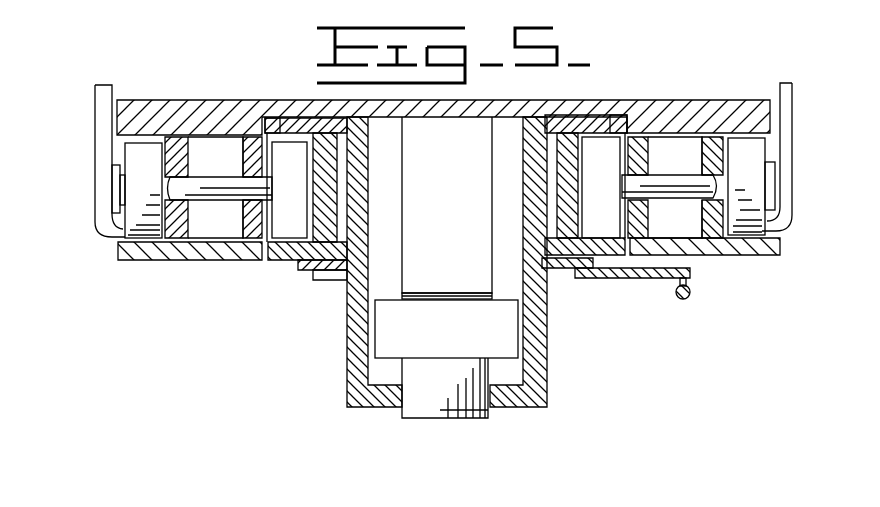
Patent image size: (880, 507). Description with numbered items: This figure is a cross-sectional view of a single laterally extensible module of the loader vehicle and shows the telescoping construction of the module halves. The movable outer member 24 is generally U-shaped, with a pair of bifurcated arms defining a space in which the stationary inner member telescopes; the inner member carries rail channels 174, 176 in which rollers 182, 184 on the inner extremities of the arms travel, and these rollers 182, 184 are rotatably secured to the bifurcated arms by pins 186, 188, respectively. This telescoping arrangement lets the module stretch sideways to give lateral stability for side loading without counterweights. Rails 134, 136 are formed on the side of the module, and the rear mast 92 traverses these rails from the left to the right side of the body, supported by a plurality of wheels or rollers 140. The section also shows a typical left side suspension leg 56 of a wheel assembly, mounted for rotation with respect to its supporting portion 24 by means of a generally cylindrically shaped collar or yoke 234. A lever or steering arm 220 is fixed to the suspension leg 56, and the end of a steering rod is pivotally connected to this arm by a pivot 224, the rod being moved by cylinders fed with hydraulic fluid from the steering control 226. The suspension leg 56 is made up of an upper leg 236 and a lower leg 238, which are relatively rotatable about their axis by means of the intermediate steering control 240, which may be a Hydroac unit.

The movable outer member 24 is at (688, 104).
The suspension leg 56 is at (497, 417).
The rear mast 92 is at (789, 110).
The rail 134 is at (770, 226).
The rail 136 is at (143, 240).
The roller 140 is at (152, 230).
The rail channel 174 is at (608, 230).
The rail channel 176 is at (284, 236).
The roller 182 is at (608, 146).
The roller 184 is at (283, 147).
The pin 186 is at (232, 190).
The pin 188 is at (688, 146).
The steering arm 220 is at (625, 279).
The pivot 224 is at (688, 283).
The steering control 226 is at (703, 313).
The collar or yoke 234 is at (548, 378).
The upper leg 236 is at (470, 201).
The intermediate steering control 240 is at (474, 338).
The lower leg 238 is at (458, 387).